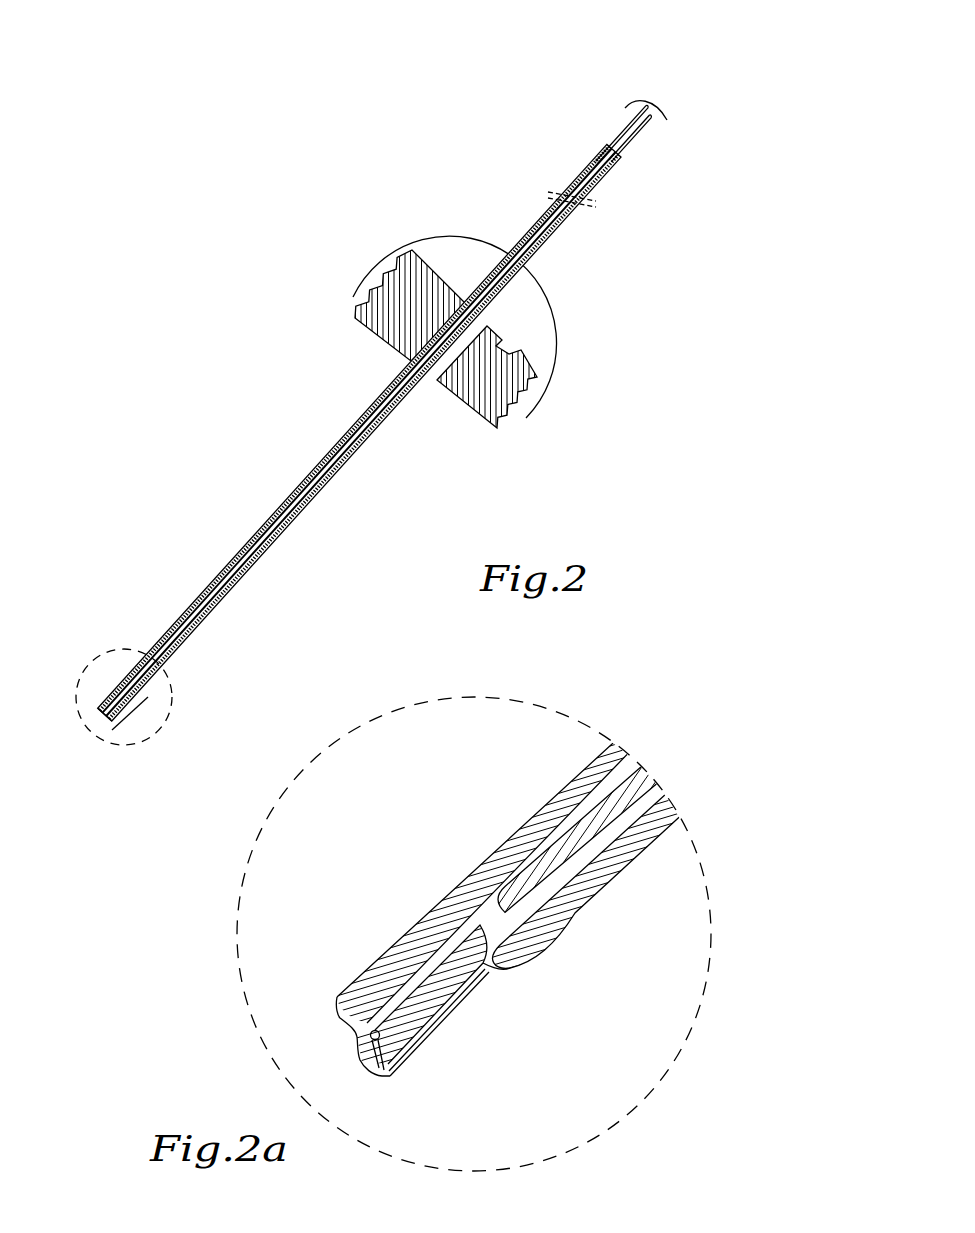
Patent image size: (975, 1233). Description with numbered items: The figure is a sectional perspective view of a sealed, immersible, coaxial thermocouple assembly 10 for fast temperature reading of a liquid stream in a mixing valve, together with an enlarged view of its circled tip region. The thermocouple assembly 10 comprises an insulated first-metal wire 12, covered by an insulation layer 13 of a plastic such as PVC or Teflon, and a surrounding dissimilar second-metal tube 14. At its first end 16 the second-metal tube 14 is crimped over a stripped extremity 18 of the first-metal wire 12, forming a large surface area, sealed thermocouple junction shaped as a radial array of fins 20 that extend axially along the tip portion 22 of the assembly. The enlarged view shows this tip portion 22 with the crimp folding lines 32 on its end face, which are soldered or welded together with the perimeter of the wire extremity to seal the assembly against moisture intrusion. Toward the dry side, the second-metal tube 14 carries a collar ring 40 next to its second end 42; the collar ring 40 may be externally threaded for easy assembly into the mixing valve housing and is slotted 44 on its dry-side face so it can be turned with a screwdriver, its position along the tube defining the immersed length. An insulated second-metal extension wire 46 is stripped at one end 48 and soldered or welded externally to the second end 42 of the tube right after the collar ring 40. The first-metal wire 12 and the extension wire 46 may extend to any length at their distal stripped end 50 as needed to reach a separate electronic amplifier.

In FIG. 2, the thermocouple assembly 10 is at (217, 198).
In FIG. 2, the insulated first-metal wire 12 is at (577, 205).
In FIG. 2A, the insulated first-metal wire 12 is at (607, 863).
In FIG. 2A, the insulation layer 13 is at (557, 900).
In FIG. 2, the second-metal tube 14 is at (283, 503).
In FIG. 2A, the second-metal tube 14 is at (540, 809).
In FIG. 2, the first end 16 is at (105, 703).
In FIG. 2A, the first end 16 is at (357, 977).
In FIG. 2A, the stripped extremity 18 is at (430, 997).
In FIG. 2A, the radial array of fins 20 is at (418, 1060).
In FIG. 2, the tip portion 22 is at (135, 718).
In FIG. 2A, the crimp folding lines 32 is at (373, 1047).
In FIG. 2, the collar ring 40 is at (355, 303).
In FIG. 2, the second end 42 is at (526, 264).
In FIG. 2, the slot 44 is at (505, 350).
In FIG. 2, the insulated second-metal extension wire 46 is at (526, 236).
In FIG. 2, the stripped end 48 is at (490, 272).
In FIG. 2, the distal stripped end 50 is at (667, 120).